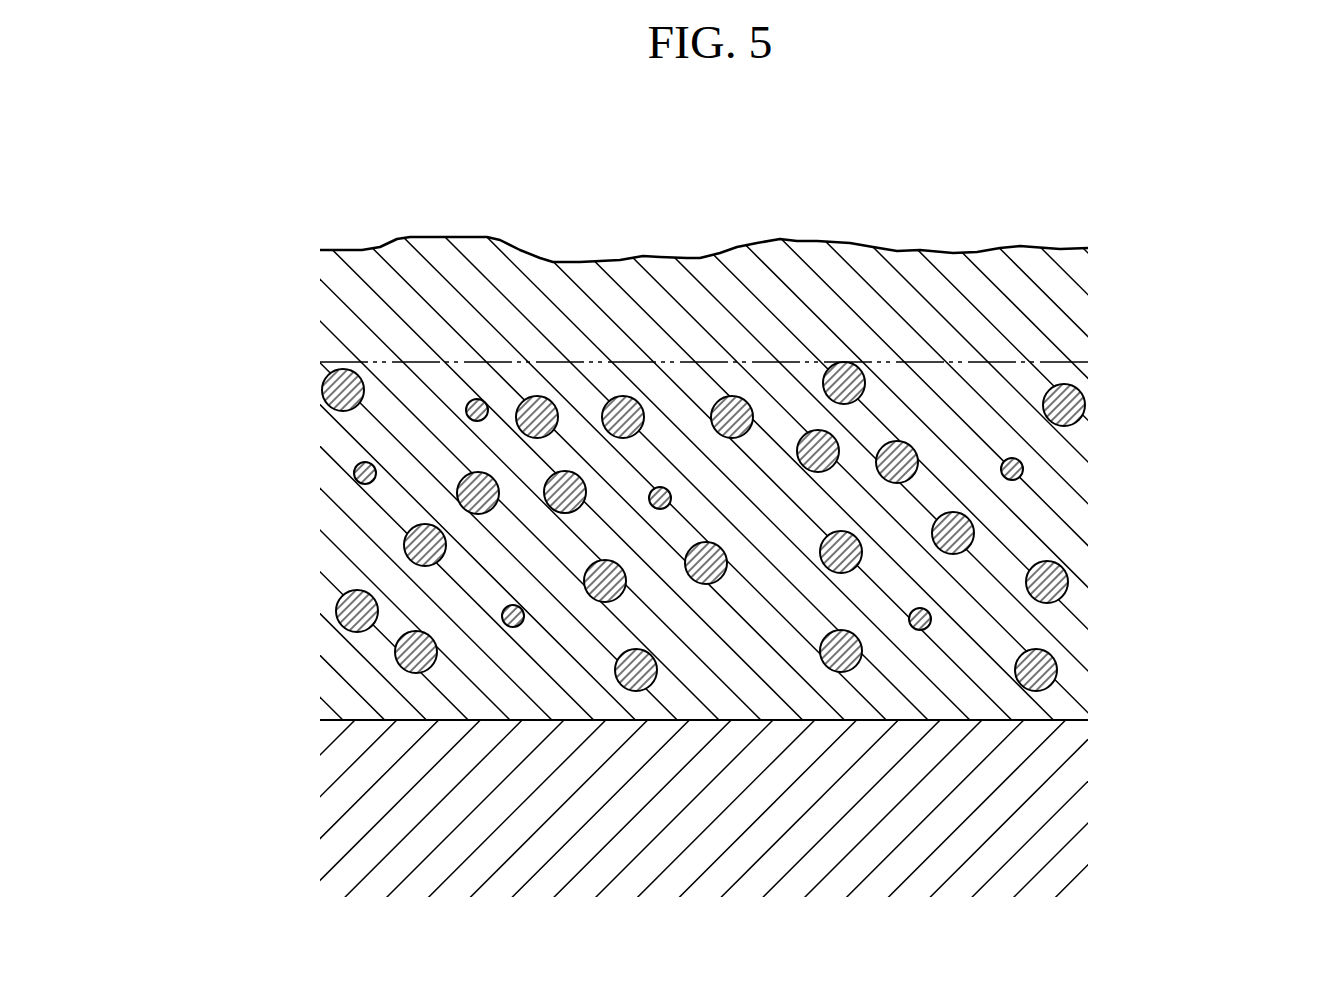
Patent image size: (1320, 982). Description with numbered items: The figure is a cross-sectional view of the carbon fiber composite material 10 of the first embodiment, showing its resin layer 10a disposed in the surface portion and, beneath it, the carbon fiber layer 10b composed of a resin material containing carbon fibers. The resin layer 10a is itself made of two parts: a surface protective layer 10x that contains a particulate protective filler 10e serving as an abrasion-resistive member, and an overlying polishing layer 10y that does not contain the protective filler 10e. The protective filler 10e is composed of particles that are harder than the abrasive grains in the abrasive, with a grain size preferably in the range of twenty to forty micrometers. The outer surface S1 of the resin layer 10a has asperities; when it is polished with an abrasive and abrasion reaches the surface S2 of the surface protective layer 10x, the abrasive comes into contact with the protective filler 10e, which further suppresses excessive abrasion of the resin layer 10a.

The carbon fiber composite material 10 is at (1180, 367).
The resin layer 10a is at (215, 248).
The carbon fiber layer 10b is at (300, 720).
The surface protective layer 10x is at (300, 362).
The polishing layer 10y is at (300, 248).
The protective filler 10e is at (343, 368).
The surface S1 is at (735, 248).
The surface S2 is at (1056, 362).